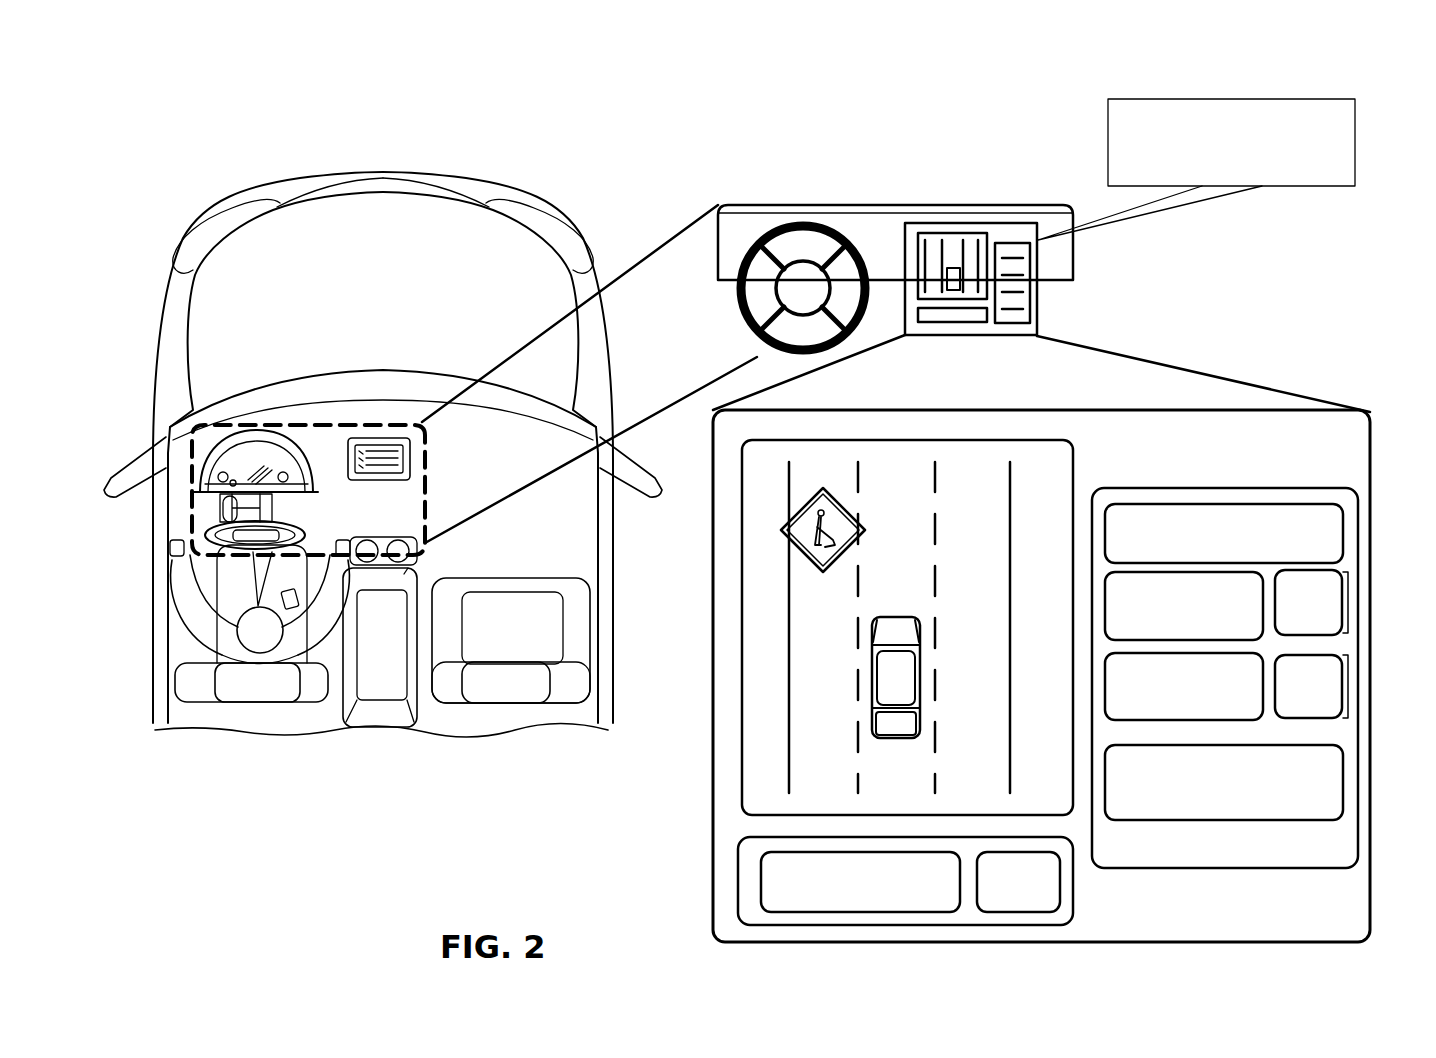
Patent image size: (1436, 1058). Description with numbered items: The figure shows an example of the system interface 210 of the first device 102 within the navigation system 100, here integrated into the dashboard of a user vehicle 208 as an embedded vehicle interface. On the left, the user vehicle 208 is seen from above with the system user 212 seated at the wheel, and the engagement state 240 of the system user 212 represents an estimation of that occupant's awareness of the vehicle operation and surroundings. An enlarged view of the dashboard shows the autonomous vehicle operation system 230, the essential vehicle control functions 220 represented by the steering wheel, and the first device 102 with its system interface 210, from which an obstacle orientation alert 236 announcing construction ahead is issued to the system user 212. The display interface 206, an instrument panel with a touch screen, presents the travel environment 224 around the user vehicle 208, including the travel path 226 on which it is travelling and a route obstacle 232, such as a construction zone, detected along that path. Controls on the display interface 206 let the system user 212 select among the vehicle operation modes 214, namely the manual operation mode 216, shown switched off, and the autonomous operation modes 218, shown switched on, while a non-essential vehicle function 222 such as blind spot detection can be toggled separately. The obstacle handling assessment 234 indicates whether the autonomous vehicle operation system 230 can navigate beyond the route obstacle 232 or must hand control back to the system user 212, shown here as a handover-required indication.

The navigation system 100 is at (200, 97).
The user vehicle 208 is at (167, 358).
The engagement state 240 is at (193, 642).
The system user 212 is at (257, 642).
The autonomous vehicle operation system 230 is at (867, 240).
The essential vehicle control functions 220 is at (803, 243).
The first device 102 is at (925, 223).
The system interface 210 is at (978, 218).
The obstacle orientation alert 236 is at (1355, 140).
The display interface 206 is at (1333, 448).
The travel environment 224 is at (770, 712).
The travel path 226 is at (827, 755).
The route obstacles 232 is at (792, 547).
The non-essential vehicle functions 222 is at (738, 855).
The vehicle operation modes 214 is at (1343, 535).
The manual operation mode 216 is at (1348, 598).
The autonomous operation modes 218 is at (1348, 683).
The obstacle handling assessment 234 is at (1343, 783).